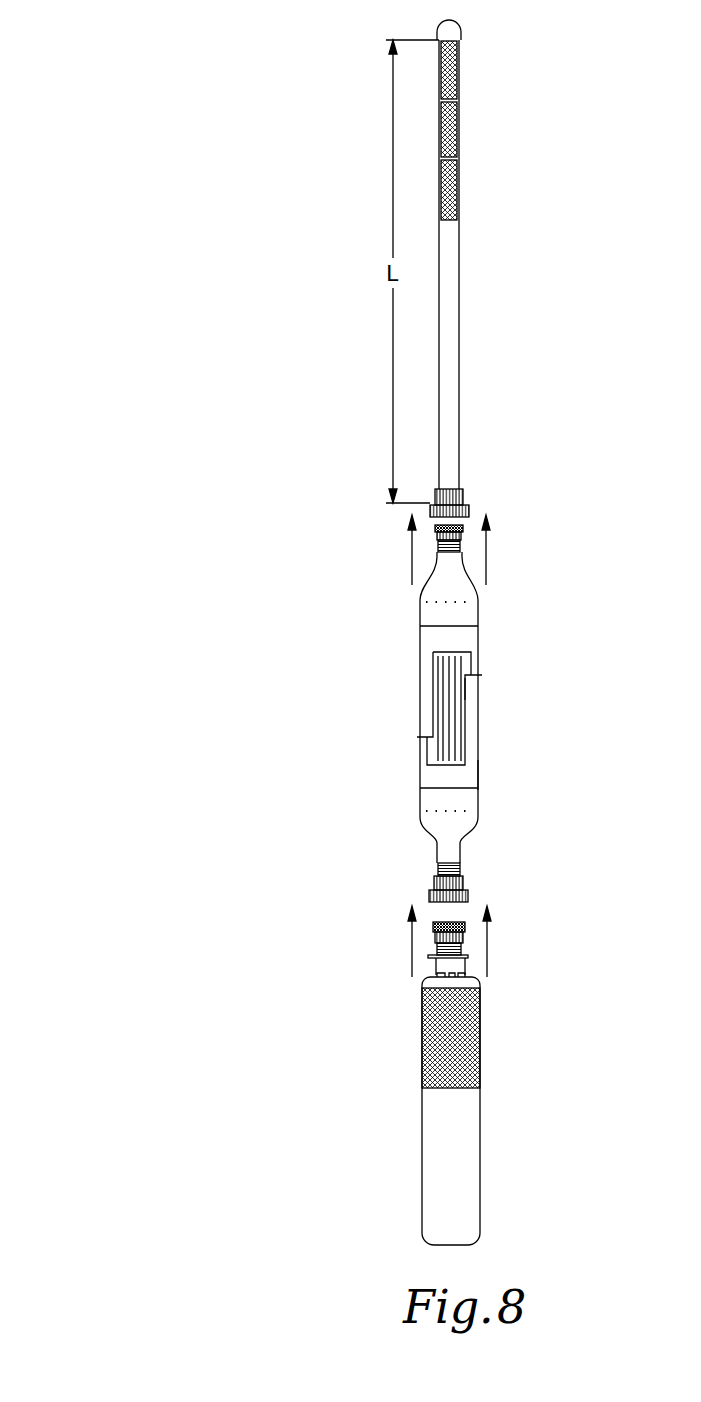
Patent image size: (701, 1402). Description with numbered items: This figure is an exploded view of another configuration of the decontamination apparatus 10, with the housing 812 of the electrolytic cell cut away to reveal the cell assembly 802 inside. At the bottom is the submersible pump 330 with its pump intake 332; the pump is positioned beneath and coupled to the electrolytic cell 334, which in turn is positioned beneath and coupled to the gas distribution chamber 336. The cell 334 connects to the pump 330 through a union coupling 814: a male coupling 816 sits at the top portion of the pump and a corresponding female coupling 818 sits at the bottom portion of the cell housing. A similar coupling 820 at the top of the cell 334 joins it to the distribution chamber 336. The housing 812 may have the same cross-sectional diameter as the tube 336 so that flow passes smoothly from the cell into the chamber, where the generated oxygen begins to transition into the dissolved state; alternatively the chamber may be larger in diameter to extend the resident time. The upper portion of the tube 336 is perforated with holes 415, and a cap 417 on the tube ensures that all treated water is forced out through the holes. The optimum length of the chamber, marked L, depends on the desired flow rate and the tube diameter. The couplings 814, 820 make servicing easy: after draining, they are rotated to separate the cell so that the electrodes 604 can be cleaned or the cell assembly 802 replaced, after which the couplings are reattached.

The decontamination apparatus 10 is at (148, 552).
The submersible pump 330 is at (512, 1083).
The pump intake 332 is at (480, 1060).
The electrolytic cell 334 is at (387, 688).
The gas distribution chamber 336 is at (459, 365).
The holes 415 is at (450, 113).
The cap 417 is at (461, 31).
The electrodes 604 is at (465, 684).
The cell assembly 802 is at (480, 745).
The housing 812 is at (478, 774).
The union coupling 814 is at (490, 883).
The male coupling 816 is at (465, 928).
The female coupling 818 is at (429, 895).
The coupling 820 is at (368, 518).